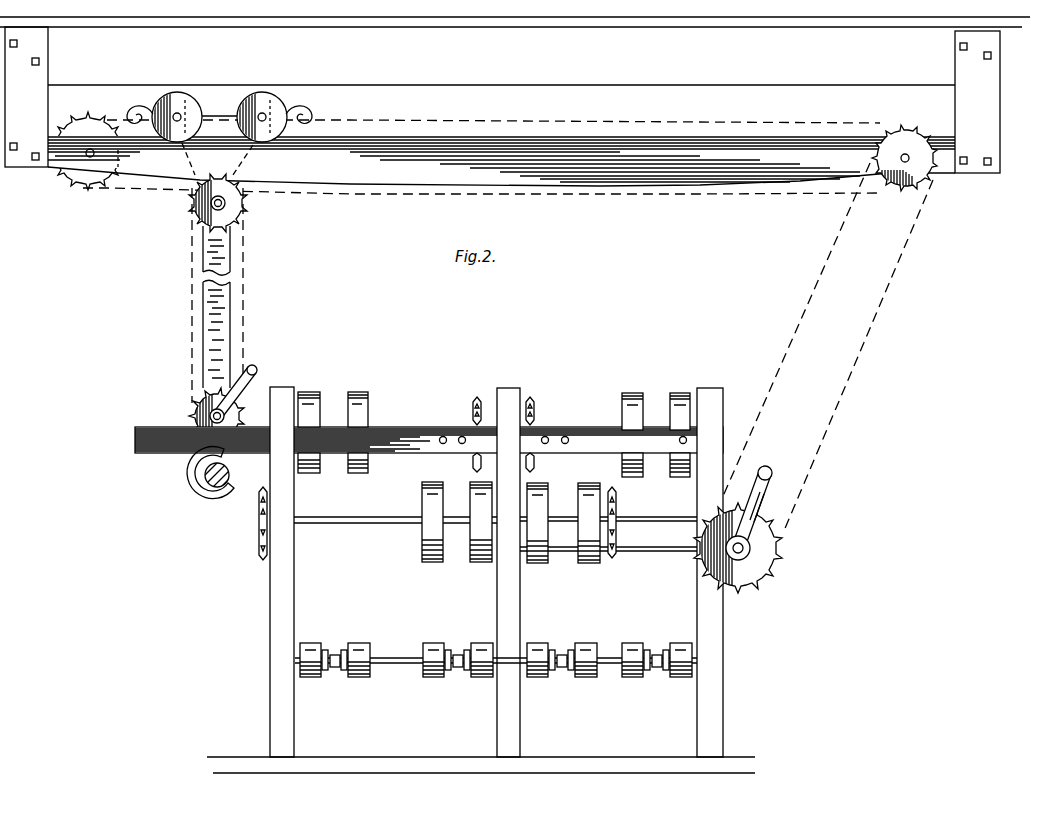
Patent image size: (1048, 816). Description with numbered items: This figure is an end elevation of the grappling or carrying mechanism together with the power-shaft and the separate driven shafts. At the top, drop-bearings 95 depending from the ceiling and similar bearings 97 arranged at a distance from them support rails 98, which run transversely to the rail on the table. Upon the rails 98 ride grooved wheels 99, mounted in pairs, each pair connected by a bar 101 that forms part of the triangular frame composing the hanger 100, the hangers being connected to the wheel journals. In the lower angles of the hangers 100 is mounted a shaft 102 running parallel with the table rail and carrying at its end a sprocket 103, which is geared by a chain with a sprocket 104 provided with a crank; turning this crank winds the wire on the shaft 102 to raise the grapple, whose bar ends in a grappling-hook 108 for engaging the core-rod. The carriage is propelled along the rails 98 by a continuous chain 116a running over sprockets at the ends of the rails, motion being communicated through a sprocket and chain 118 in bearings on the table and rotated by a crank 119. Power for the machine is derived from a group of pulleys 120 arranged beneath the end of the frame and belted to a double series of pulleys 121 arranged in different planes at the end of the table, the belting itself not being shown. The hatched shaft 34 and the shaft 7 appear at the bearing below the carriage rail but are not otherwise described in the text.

The drop-bearings 95 is at (26, 97).
The bearings 97 is at (977, 102).
The rails 98 is at (501, 161).
The grooved wheels 99 is at (177, 93).
The hangers 100 is at (192, 153).
The bar 101 is at (214, 115).
The shaft 102 is at (247, 212).
The sprocket 103 is at (196, 218).
The sprocket 104 is at (192, 408).
The grappling-hook 108 is at (210, 482).
The shaft 34 is at (230, 468).
The shaft 7 is at (198, 483).
The chain 116a is at (648, 196).
The sprocket and chain 118 is at (739, 553).
The crank 119 is at (766, 482).
The pulleys 120 is at (496, 648).
The pulleys 121 is at (474, 468).